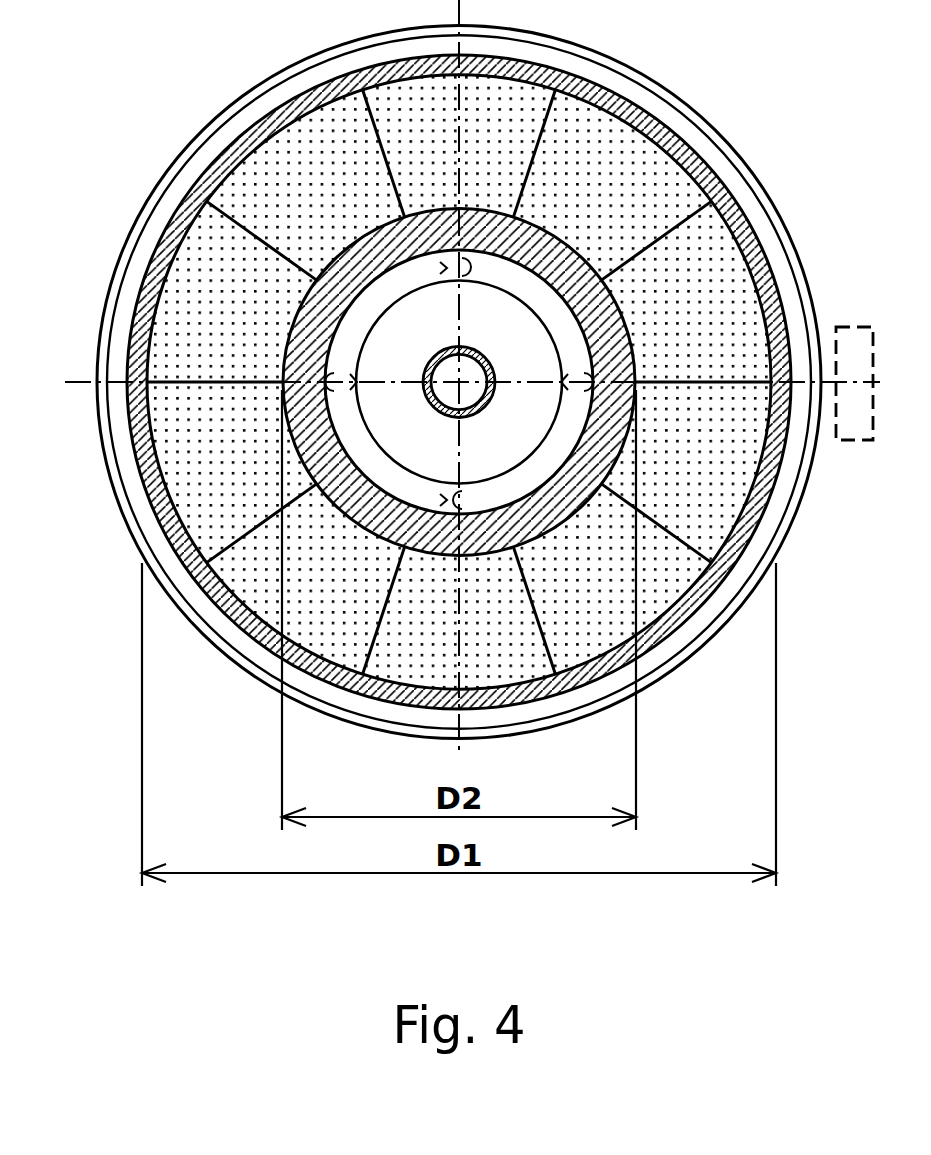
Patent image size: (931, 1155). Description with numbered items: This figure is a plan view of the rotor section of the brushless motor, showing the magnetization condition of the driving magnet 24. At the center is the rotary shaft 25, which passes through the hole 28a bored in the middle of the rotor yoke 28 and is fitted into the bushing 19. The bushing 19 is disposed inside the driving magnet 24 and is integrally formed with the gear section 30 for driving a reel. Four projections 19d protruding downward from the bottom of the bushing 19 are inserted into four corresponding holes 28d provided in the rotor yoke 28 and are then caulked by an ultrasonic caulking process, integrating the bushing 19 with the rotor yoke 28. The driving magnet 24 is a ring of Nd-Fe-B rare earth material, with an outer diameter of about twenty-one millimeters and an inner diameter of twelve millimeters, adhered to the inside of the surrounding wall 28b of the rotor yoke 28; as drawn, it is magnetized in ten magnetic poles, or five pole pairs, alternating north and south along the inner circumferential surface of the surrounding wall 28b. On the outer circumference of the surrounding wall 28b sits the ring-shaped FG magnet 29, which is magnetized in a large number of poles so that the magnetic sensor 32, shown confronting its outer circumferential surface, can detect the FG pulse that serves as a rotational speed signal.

The bushing 19 is at (407, 312).
The projections 19d is at (447, 268).
The driving magnet 24 is at (673, 200).
The rotary shaft 25 is at (480, 370).
The rotor yoke 28 is at (537, 217).
The hole 28a is at (423, 377).
The surrounding wall 28b is at (598, 82).
The holes 28d is at (459, 441).
The FG magnet 29 is at (383, 52).
The gear section 30 is at (363, 340).
The magnetic sensor 32 is at (848, 442).